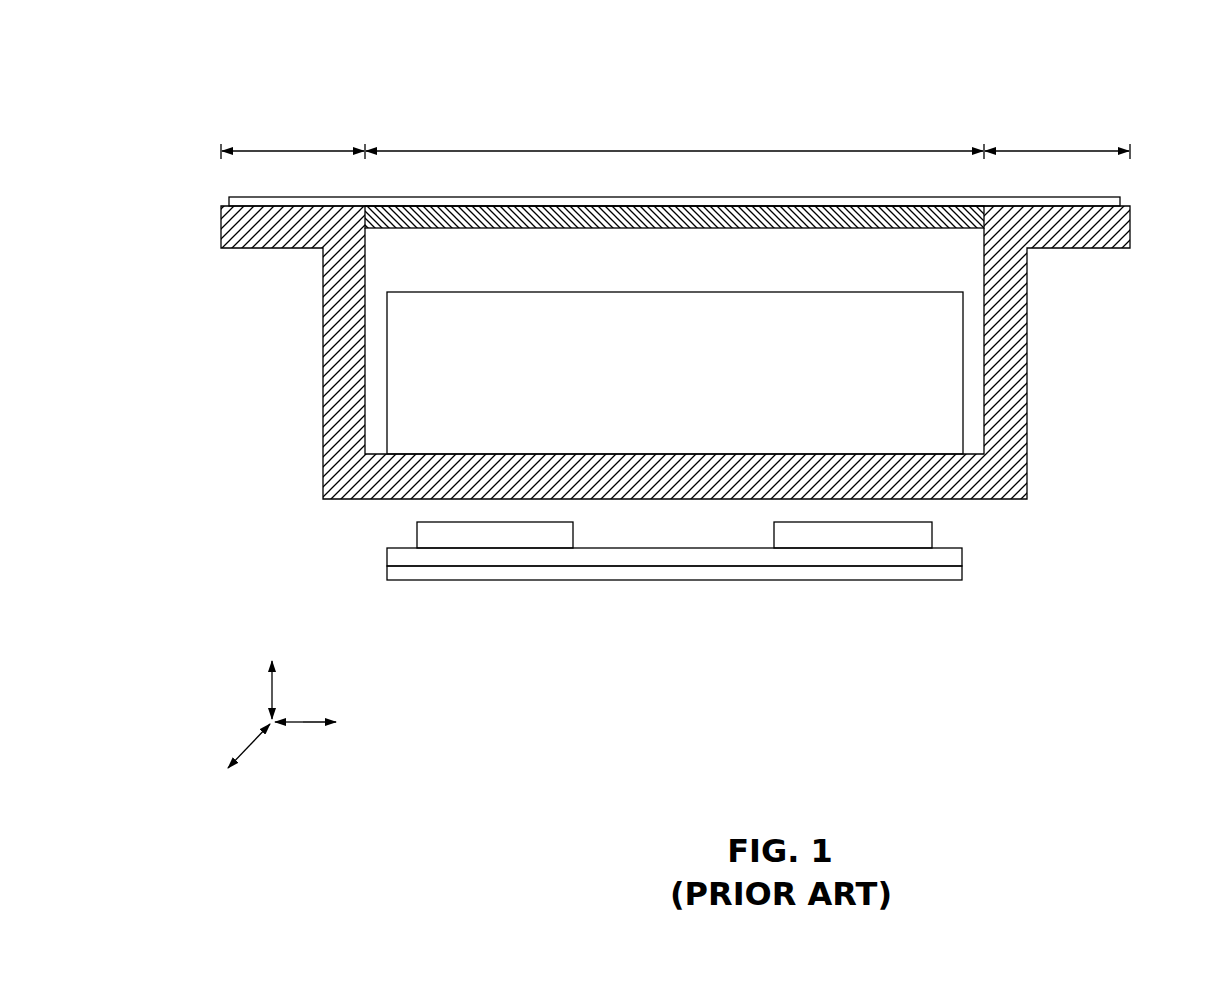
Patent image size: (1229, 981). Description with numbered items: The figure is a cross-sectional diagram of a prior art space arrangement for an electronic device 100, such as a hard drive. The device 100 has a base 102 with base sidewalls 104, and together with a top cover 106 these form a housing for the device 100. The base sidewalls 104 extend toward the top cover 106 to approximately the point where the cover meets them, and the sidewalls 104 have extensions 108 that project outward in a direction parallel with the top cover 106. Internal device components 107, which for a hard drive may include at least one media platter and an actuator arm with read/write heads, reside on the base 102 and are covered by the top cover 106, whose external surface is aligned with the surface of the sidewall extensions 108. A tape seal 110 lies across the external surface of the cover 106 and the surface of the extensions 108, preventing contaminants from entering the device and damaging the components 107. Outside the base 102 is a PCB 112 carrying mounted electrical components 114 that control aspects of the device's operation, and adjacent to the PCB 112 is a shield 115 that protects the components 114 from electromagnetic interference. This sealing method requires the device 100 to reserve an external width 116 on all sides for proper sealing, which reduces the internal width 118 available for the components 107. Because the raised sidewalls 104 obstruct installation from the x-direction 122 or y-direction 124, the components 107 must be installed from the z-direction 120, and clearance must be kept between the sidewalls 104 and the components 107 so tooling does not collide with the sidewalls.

The electronic device 100 is at (250, 62).
The base 102 is at (528, 467).
The base sidewalls 104 is at (1013, 345).
The top cover 106 is at (880, 229).
The internal device components 107 is at (808, 388).
The sidewall extensions 108 is at (1130, 236).
The tape seal 110 is at (718, 201).
The PCB 112 is at (898, 560).
The electrical components 114 is at (563, 537).
The shield 115 is at (805, 572).
The external width 116 is at (268, 152).
The internal width 118 is at (697, 152).
The z-direction 120 is at (272, 626).
The x-direction 122 is at (367, 723).
The y-direction 124 is at (222, 802).